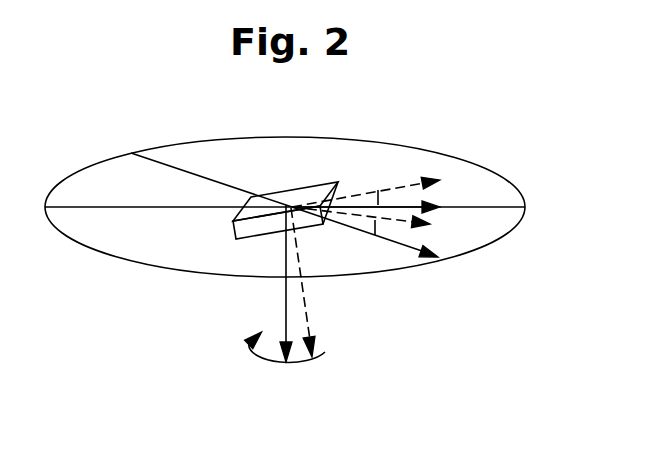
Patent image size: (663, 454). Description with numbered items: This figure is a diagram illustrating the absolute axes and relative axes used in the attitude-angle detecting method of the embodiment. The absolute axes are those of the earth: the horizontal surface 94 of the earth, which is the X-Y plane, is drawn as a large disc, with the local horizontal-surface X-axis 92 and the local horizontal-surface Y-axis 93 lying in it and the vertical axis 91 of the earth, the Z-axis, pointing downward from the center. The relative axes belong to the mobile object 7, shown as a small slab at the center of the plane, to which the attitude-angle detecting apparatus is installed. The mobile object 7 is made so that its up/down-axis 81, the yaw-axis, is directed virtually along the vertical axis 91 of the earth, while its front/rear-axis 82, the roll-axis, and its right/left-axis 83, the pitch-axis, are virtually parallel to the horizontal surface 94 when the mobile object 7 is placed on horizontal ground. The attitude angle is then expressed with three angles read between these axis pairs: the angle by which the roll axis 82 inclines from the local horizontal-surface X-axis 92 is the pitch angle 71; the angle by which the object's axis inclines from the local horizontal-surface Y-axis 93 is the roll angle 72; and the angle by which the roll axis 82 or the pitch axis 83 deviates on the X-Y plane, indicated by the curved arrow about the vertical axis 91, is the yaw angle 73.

The horizontal surface of earth 94 is at (193, 143).
The mobile object 7 is at (273, 192).
The pitch angle 71 is at (378, 190).
The roll angle 72 is at (350, 227).
The up/down-axis of mobile object (yaw-axis) 81 is at (302, 297).
The front/rear-axis of mobile object (roll-axis) 82 is at (408, 182).
The right/left-axis of mobile object (pitch-axis) 83 is at (412, 215).
The vertical axis of earth (Z-axis) 91 is at (283, 285).
The local horizontal-surface X-axis 92 is at (418, 204).
The local horizontal-surface Y-axis 93 is at (401, 243).
The yaw angle 73 is at (290, 370).